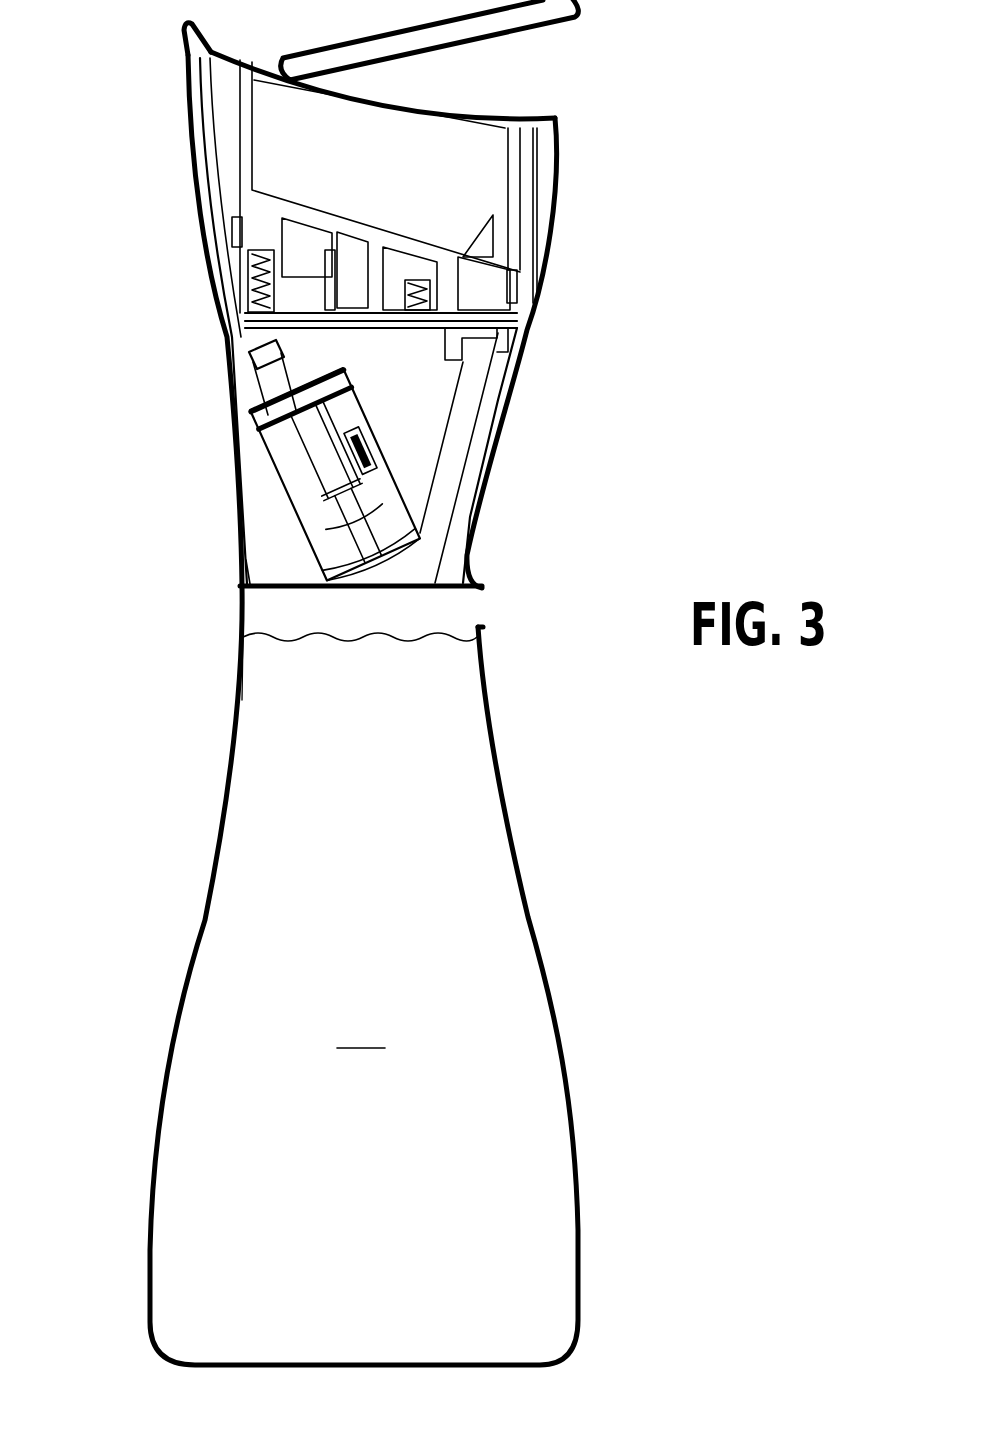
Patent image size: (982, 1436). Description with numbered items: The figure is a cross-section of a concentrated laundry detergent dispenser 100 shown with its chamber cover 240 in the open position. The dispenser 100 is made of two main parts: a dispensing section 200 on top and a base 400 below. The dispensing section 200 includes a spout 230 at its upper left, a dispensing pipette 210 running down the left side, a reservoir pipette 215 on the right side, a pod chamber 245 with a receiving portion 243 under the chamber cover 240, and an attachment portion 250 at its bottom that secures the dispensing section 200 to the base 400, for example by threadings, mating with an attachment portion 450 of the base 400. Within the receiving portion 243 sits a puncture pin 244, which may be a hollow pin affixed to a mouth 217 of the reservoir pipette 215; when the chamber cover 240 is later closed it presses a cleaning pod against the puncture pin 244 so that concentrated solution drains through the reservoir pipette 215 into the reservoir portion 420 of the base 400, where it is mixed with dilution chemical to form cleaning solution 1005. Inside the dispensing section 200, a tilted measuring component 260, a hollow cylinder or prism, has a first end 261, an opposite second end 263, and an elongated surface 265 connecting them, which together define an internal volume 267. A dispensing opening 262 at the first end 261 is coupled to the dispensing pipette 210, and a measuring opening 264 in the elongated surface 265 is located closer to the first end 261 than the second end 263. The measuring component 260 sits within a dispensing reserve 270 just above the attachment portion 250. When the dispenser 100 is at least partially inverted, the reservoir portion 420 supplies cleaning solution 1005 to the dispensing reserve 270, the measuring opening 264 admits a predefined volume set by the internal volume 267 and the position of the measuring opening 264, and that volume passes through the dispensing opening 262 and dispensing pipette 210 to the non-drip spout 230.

The concentrated laundry detergent dispenser 100 is at (694, 264).
The dispensing section 200 is at (362, 344).
The dispensing pipette 210 is at (218, 176).
The reservoir pipette 215 is at (462, 457).
The mouth of the reservoir pipette 217 is at (480, 337).
The spout 230 is at (185, 42).
The chamber cover 240 is at (582, 12).
The receiving portion 243 is at (467, 140).
The puncture pin 244 is at (497, 238).
The pod chamber 245 is at (498, 195).
The attachment portion 250 is at (243, 584).
The measuring component 260 is at (298, 506).
The first end 261 is at (336, 477).
The dispensing opening 262 is at (272, 358).
The second end 263 is at (358, 525).
The measuring opening 264 is at (360, 451).
The elongated surface 265 is at (324, 450).
The internal volume 267 is at (355, 519).
The dispensing reserve 270 is at (264, 558).
The base 400 is at (527, 917).
The reservoir portion 420 is at (266, 853).
The attachment portion 450 is at (485, 598).
The cleaning solution 1005 is at (361, 1036).